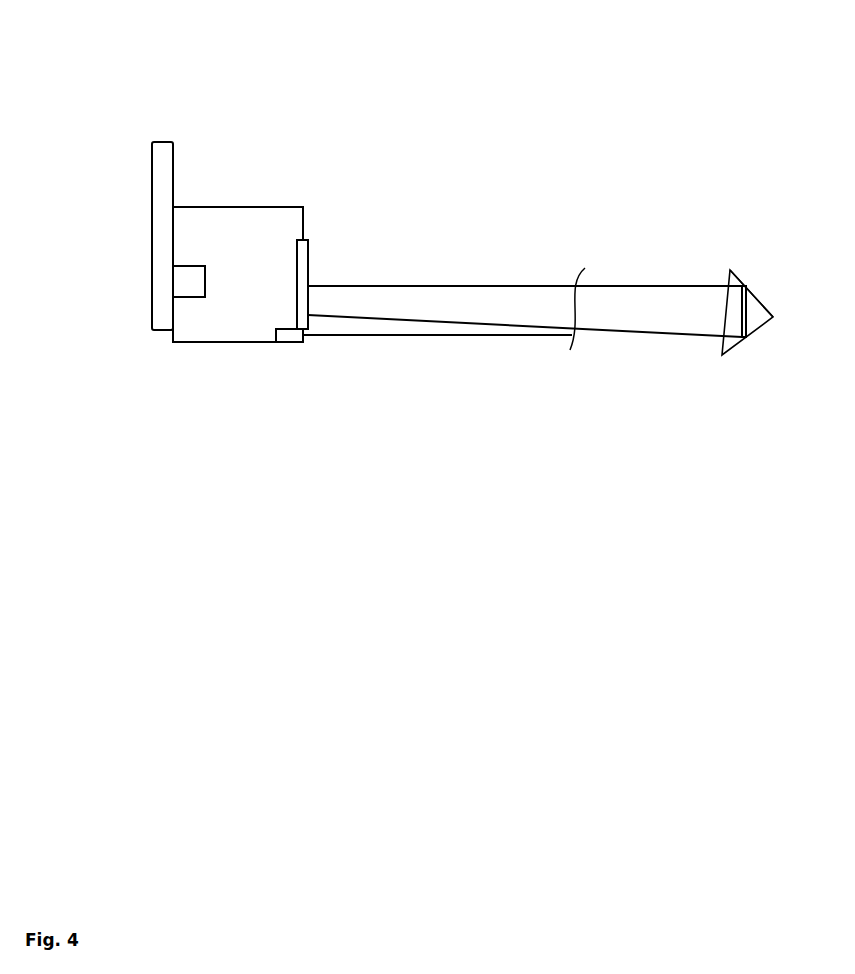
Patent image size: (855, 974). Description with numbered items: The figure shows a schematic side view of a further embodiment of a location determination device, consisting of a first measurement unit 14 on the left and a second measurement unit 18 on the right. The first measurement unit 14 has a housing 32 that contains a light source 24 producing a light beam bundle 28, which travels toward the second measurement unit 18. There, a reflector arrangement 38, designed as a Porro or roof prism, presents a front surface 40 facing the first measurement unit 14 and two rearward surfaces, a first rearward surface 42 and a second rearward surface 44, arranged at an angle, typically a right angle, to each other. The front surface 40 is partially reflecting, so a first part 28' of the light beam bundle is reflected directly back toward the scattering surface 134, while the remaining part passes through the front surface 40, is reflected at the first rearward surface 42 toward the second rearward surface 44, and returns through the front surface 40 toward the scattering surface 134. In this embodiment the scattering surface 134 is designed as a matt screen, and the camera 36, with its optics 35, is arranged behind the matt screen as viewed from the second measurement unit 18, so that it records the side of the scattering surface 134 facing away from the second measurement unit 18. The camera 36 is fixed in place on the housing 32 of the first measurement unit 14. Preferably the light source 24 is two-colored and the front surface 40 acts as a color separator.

The first measurement unit 14 is at (344, 197).
The second measurement unit 18 is at (703, 245).
The light source 24 is at (290, 337).
The light beam bundle 28 is at (437, 387).
The first part of the light beam bundle 28' is at (525, 264).
The housing 32 is at (269, 205).
The optics 35 is at (182, 282).
The camera 36 is at (162, 212).
The reflector arrangement 38 is at (700, 317).
The front surface 40 is at (722, 325).
The first rearward surface 42 is at (750, 337).
The second rearward surface 44 is at (754, 293).
The scattering surface 134 is at (307, 268).